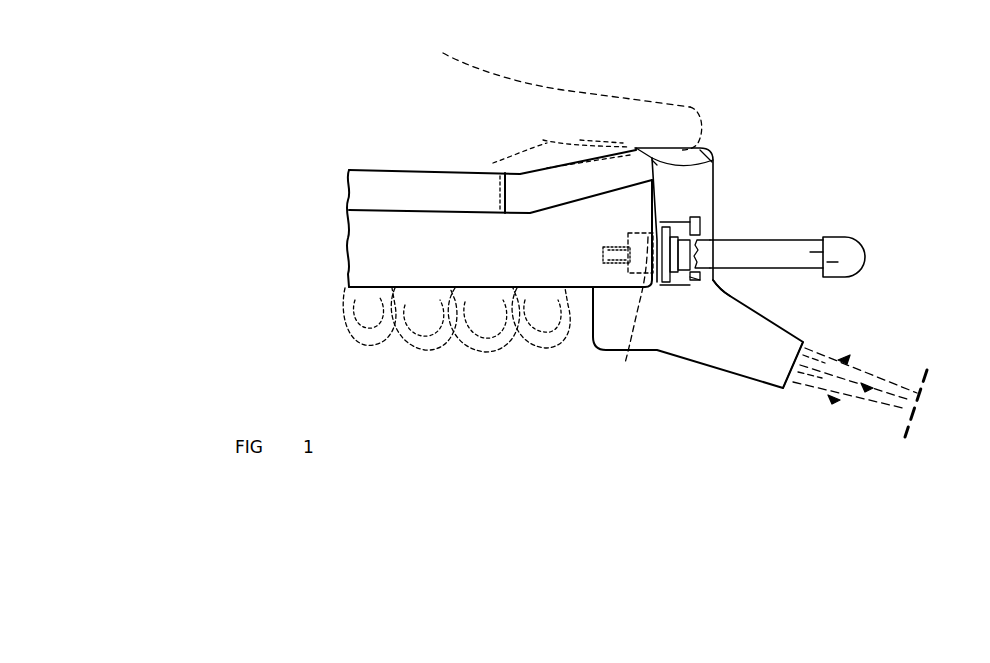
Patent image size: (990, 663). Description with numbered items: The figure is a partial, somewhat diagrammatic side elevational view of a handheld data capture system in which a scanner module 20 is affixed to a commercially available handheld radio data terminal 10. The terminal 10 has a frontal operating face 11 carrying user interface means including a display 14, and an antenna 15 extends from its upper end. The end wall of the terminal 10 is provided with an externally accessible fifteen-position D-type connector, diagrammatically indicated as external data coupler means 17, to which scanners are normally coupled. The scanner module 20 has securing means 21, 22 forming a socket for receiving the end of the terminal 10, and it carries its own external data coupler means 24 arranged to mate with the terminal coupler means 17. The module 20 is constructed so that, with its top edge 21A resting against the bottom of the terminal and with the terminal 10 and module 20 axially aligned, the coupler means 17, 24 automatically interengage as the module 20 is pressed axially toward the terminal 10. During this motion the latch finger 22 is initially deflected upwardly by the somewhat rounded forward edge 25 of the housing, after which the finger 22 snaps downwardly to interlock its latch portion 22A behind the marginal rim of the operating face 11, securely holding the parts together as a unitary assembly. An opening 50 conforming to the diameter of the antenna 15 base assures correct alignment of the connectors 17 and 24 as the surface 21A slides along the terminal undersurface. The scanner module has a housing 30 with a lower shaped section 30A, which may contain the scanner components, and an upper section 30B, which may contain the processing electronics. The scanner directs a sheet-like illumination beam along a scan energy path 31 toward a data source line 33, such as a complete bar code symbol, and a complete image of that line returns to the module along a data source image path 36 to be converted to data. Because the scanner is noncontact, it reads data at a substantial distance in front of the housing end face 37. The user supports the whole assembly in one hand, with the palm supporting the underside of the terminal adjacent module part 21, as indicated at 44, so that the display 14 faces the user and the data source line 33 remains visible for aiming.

The handheld radio data terminal 10 is at (370, 347).
The frontal operating face 11 is at (375, 168).
The display 14 is at (505, 185).
The antenna 15 is at (778, 240).
The external data coupler means 17 is at (632, 313).
The scanner module 20 is at (778, 397).
The securing means 21 is at (618, 302).
The top edge 21A is at (592, 302).
The latch finger 22 is at (637, 148).
The latch portion 22A is at (713, 160).
The external data coupler means 24 is at (680, 220).
The rounded forward edge 25 is at (693, 148).
The housing 30 is at (702, 370).
The lower shaped section 30A is at (740, 367).
The upper section 30B is at (713, 188).
The scan energy path 31 is at (865, 400).
The data source line 33 is at (913, 427).
The data source image path 36 is at (830, 357).
The end face 37 is at (805, 343).
The palm support 44 is at (468, 347).
The opening 50 is at (688, 280).